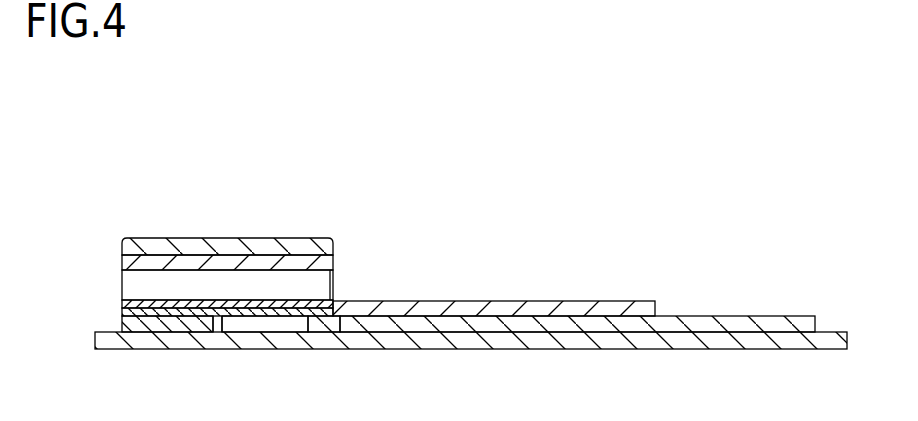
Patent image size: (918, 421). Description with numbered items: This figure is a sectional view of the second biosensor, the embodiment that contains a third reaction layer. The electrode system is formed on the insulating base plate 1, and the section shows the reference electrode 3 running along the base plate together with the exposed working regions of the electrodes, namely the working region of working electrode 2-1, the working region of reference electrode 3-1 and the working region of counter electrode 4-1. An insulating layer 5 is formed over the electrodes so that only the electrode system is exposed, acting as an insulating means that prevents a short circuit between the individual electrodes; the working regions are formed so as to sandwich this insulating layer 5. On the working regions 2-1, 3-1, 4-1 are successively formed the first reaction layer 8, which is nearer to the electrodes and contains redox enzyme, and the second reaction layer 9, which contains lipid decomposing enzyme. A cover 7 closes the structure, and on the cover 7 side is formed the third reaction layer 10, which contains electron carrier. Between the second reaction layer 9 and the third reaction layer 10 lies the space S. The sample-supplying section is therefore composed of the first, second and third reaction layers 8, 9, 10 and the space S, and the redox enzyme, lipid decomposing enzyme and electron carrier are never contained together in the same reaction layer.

The insulating base plate 1 is at (718, 340).
The reference electrode 3 is at (775, 323).
The working region of reference electrode 3-1 is at (316, 325).
The insulating layer 5 is at (616, 308).
The working region of working electrode 2-1 is at (233, 325).
The working region of counter electrode 4-1 is at (147, 326).
The first reaction layer 8 is at (124, 312).
The second reaction layer 9 is at (190, 303).
The space S is at (255, 290).
The third reaction layer 10 is at (226, 265).
The cover 7 is at (291, 250).